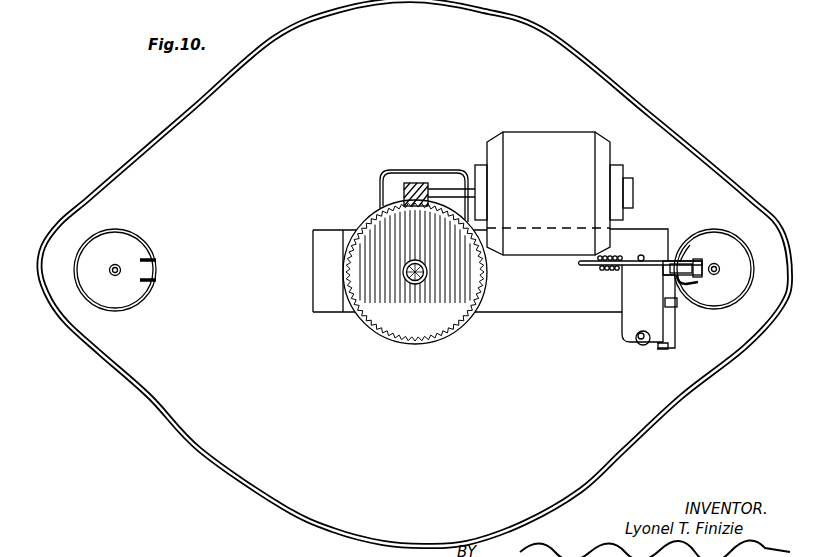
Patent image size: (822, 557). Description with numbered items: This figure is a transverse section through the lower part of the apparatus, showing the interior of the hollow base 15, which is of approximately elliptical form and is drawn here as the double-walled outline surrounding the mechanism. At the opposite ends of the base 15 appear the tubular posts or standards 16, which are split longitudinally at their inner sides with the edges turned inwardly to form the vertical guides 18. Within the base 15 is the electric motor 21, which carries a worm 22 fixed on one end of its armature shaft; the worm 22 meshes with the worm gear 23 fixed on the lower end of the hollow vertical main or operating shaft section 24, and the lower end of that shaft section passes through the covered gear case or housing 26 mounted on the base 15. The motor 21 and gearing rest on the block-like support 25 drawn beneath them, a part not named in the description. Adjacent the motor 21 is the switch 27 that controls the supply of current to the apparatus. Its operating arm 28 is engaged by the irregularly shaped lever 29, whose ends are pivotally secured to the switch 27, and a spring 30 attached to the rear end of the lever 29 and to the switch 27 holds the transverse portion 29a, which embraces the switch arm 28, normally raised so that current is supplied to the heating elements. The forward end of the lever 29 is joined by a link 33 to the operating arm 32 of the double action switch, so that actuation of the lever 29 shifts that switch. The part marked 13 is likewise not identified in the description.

The pin 13 is at (690, 246).
The hollow base 15 is at (706, 165).
The tubular posts or standards 16 is at (124, 232).
The vertical guides 18 is at (156, 278).
The electric motor 21 is at (537, 137).
The worm 22 is at (408, 184).
The worm gear 23 is at (410, 330).
The main or operating shaft section 24 is at (428, 272).
The base 25 is at (318, 270).
The gear case or housing 26 is at (384, 200).
The switch 27 is at (627, 318).
The operating arm 28 is at (678, 306).
The lever 29 is at (604, 265).
The transverse portion 29a is at (697, 262).
The spring 30 is at (612, 257).
The operating arm 32 is at (648, 345).
The link 33 is at (666, 349).